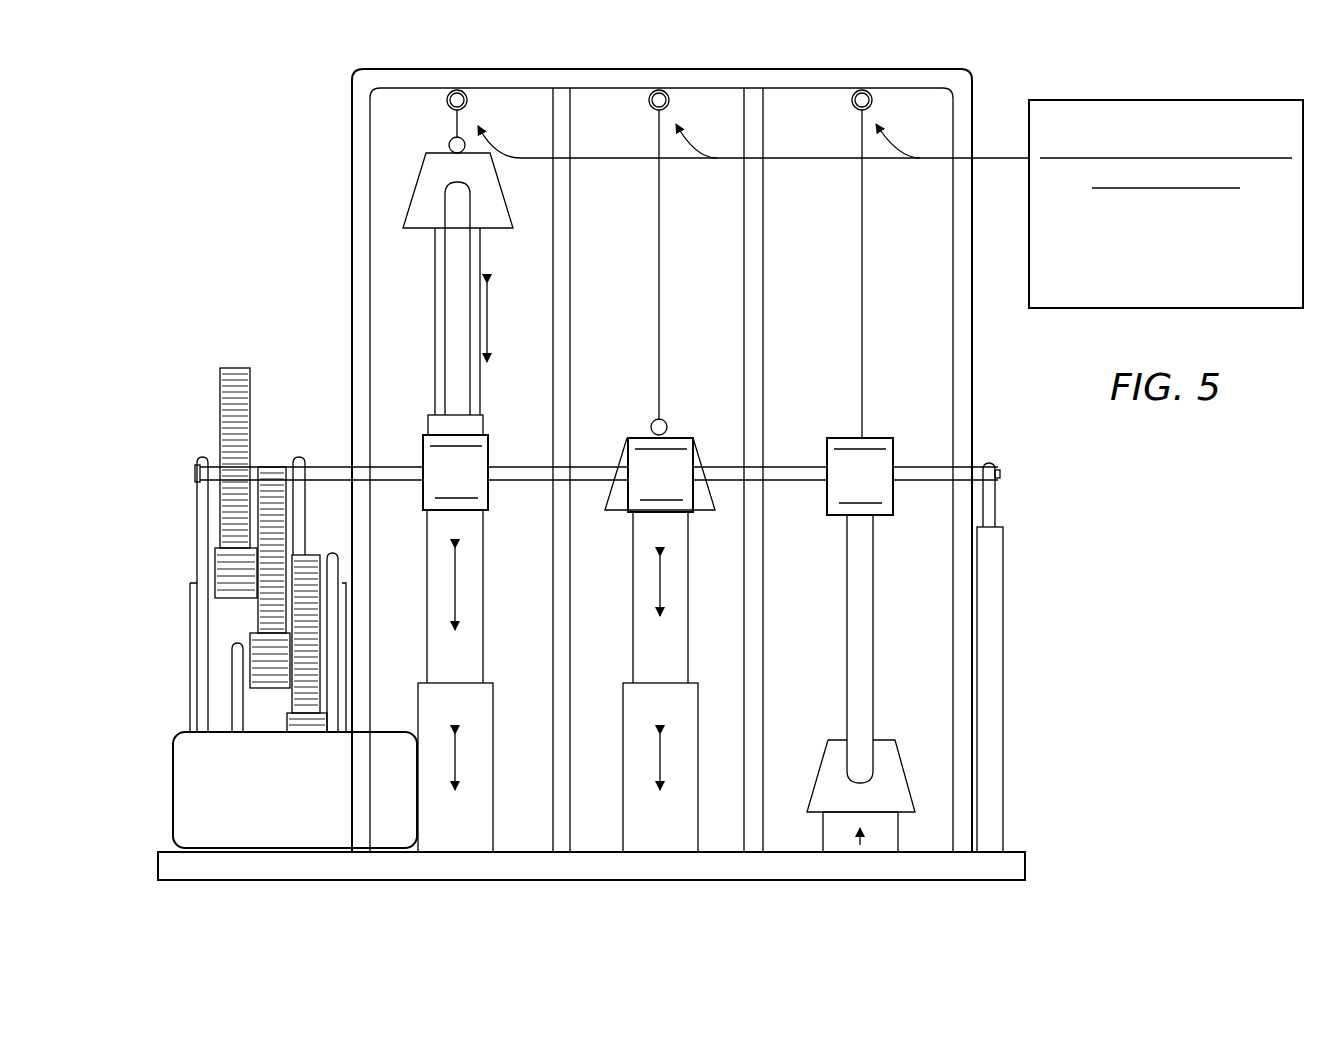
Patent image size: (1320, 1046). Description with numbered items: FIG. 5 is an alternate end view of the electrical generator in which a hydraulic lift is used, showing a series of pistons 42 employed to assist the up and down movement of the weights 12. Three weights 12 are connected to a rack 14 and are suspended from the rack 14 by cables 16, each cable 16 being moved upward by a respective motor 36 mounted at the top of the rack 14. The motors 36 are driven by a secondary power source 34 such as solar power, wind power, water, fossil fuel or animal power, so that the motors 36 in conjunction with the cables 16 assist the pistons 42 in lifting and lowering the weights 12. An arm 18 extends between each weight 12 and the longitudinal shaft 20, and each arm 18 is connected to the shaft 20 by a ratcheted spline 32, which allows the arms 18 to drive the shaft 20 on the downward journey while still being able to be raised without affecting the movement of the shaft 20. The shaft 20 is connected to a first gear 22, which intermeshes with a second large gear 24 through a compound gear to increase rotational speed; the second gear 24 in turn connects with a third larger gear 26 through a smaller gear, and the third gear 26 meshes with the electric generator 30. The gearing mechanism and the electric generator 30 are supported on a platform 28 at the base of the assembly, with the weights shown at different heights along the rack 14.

The weight 12 is at (422, 170).
The rack 14 is at (352, 120).
The cable 16 is at (455, 122).
The arm 18 is at (436, 343).
The longitudinal shaft 20 is at (940, 467).
The first gear 22 is at (236, 368).
The second gear 24 is at (277, 465).
The third gear 26 is at (310, 556).
The platform 28 is at (165, 850).
The electric generator 30 is at (285, 819).
The ratcheted spline 32 is at (443, 484).
The secondary power source 34 is at (1300, 126).
The motor 36 is at (468, 104).
The piston 42 is at (483, 597).